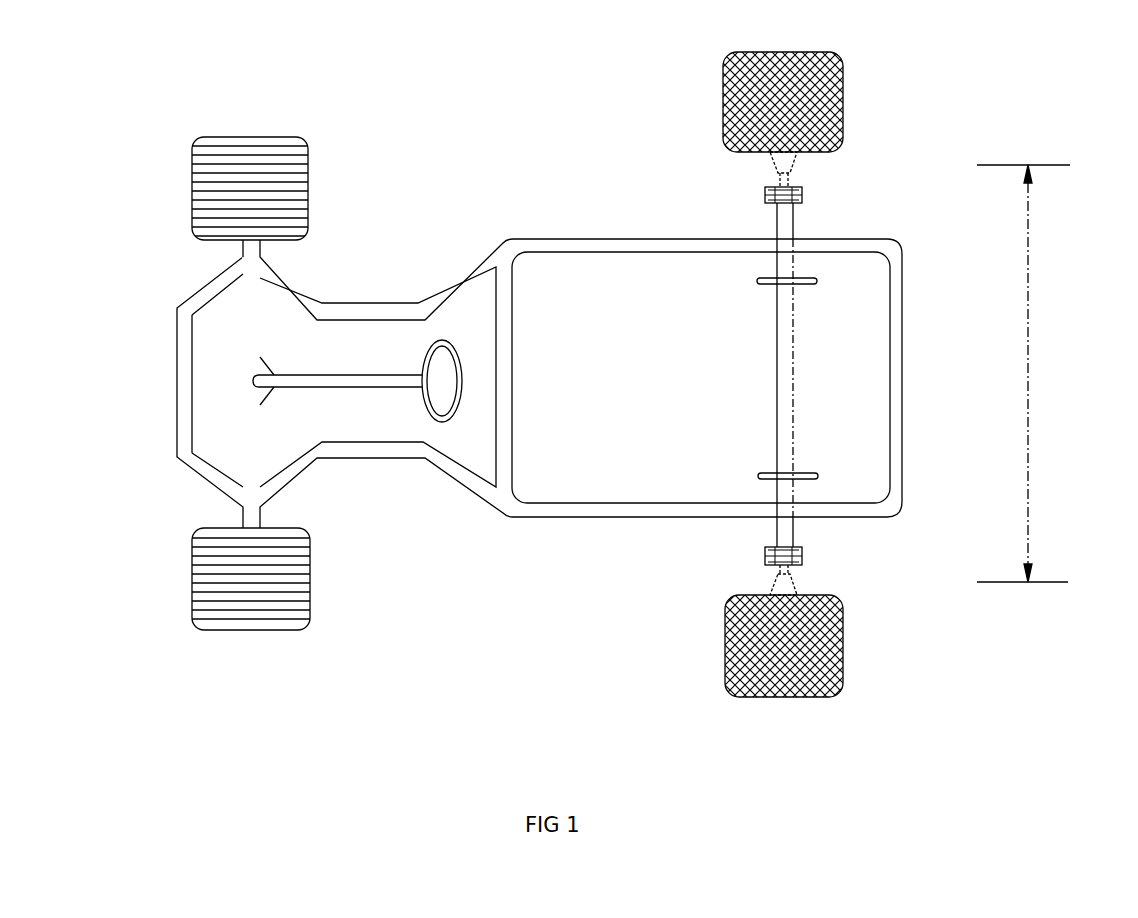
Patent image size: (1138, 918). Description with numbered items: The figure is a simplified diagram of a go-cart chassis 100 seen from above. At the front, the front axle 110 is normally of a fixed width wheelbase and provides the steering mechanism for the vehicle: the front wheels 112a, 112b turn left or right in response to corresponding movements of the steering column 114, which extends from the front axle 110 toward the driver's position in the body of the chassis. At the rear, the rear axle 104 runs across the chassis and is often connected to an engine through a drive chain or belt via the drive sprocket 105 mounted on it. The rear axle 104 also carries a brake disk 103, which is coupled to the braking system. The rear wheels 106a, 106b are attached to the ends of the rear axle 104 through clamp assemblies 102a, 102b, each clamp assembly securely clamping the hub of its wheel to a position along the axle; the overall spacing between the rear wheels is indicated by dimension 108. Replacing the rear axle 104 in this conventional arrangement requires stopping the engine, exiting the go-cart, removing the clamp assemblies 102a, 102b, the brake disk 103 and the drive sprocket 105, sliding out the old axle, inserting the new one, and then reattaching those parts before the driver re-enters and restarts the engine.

The go-cart chassis 100 is at (589, 362).
The clamp assembly 102a is at (817, 195).
The clamp assembly 102b is at (817, 567).
The brake disk 103 is at (822, 285).
The rear axle 104 is at (805, 375).
The drive sprocket 105 is at (817, 477).
The rear wheel 106a is at (839, 110).
The rear wheel 106b is at (839, 663).
The wheel spacing 108 is at (1044, 432).
The front axle 110 is at (242, 383).
The front wheel 112a is at (285, 172).
The front wheel 112b is at (290, 583).
The steering column 114 is at (359, 358).